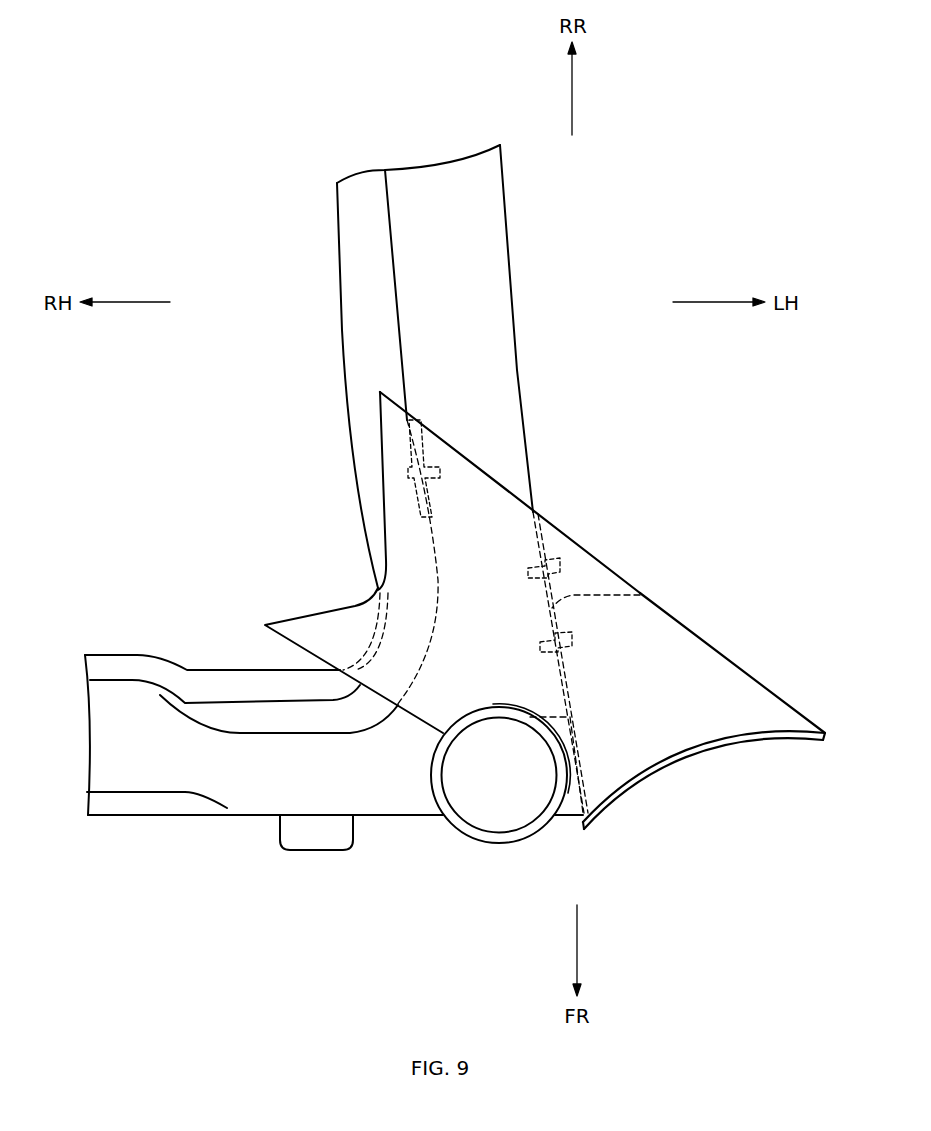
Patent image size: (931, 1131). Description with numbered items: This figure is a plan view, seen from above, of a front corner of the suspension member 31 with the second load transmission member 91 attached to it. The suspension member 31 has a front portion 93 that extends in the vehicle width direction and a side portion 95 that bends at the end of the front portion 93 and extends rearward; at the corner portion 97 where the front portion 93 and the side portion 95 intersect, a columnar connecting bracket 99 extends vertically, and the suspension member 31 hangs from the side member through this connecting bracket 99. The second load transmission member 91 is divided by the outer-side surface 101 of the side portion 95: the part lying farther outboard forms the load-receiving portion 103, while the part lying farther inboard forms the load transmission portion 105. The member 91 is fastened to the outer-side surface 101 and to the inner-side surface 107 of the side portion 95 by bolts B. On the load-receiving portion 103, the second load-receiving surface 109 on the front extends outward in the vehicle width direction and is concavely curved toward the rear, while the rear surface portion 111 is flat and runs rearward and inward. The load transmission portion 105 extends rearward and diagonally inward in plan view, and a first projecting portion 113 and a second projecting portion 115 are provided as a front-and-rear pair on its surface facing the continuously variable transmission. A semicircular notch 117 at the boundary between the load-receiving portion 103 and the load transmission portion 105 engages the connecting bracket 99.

The suspension member 31 is at (412, 166).
The side portion 95 is at (447, 275).
The load transmission portion 105 is at (478, 505).
The second projecting portion 115 is at (377, 393).
The second load transmission member 91 is at (684, 628).
The rear surface portion 111 is at (720, 657).
The inner-side surface 107 is at (410, 447).
The first projecting portion 113 is at (290, 628).
The bolts B is at (555, 562).
The outer-side surface 101 is at (640, 595).
The load-receiving portion 103 is at (647, 713).
The second load-receiving surface 109 is at (703, 753).
The connecting bracket 99 is at (500, 845).
The semicircular notch 117 is at (493, 718).
The corner portion 97 is at (405, 815).
The front portion 93 is at (190, 772).